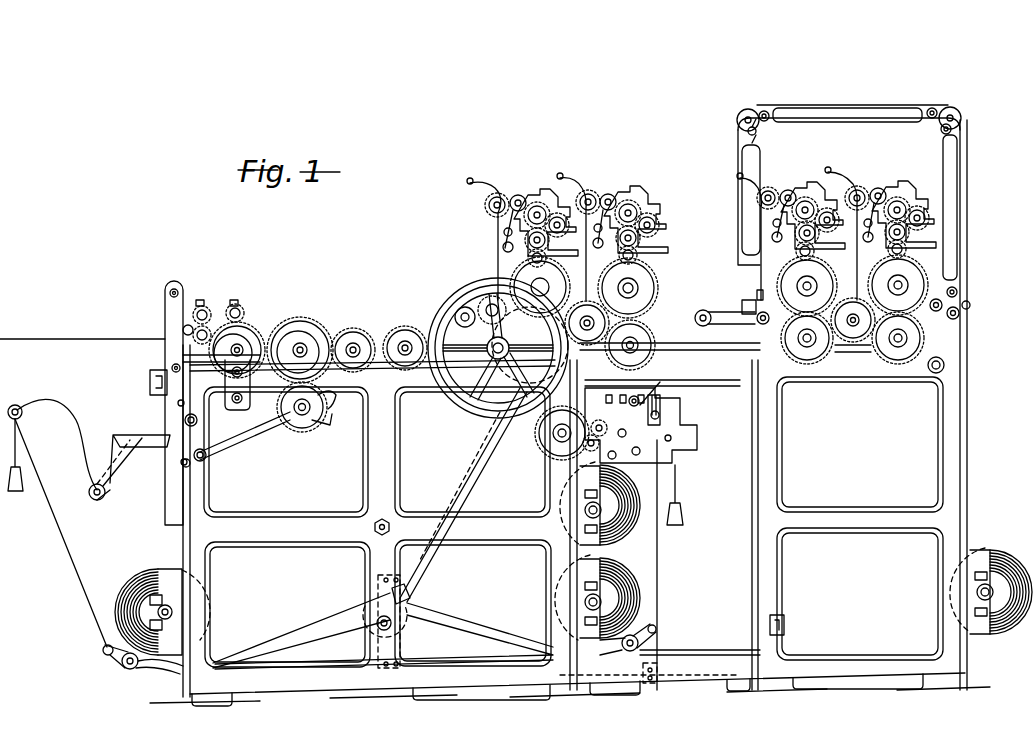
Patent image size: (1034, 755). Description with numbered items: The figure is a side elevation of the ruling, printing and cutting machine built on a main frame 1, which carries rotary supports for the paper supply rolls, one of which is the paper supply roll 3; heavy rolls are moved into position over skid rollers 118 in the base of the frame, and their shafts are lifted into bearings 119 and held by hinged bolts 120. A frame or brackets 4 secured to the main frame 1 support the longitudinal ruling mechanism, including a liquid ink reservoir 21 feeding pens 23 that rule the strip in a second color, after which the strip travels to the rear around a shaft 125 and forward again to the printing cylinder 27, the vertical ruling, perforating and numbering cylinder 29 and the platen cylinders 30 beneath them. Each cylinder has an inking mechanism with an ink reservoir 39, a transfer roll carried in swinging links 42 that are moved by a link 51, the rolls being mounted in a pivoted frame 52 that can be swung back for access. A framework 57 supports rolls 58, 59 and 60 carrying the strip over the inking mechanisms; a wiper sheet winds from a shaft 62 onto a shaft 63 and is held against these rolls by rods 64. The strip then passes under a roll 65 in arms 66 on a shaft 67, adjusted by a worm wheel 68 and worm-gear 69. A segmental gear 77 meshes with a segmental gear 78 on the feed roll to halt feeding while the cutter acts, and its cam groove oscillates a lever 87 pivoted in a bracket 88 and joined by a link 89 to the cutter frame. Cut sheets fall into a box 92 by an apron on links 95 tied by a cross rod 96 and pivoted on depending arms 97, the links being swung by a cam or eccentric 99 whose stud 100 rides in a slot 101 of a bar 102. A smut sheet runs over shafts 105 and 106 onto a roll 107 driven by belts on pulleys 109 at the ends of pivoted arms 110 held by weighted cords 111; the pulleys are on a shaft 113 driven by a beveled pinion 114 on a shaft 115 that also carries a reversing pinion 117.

The main frame 1 is at (495, 413).
The paper supply roll 3 is at (986, 560).
The frame or brackets 4 is at (683, 453).
The liquid ink reservoir 21 is at (657, 393).
The pens 23 is at (640, 397).
The printing cylinder 27 is at (892, 278).
The vertical ruling, perforating and numbering cylinder 29 is at (815, 282).
The platen cylinders 30 is at (800, 333).
The ink reservoir 39 is at (478, 198).
The swinging links 42 is at (498, 225).
The link 51 is at (505, 240).
The frame 52 is at (506, 255).
The framework 57 is at (849, 183).
The roll 58 is at (962, 315).
The roll 59 is at (962, 112).
The roll 60 is at (747, 112).
The shaft 62 is at (935, 297).
The shaft 63 is at (748, 129).
The rods 64 is at (766, 111).
The roll 65 is at (698, 316).
The arms 66 is at (722, 314).
The shaft 67 is at (760, 318).
The worm wheel 68 is at (745, 310).
The worm-gear 69 is at (756, 300).
The segmental gear 77 is at (300, 325).
The segmental gear 78 is at (248, 330).
The lever 87 is at (175, 357).
The bracket 88 is at (240, 408).
The link 89 is at (167, 306).
The box 92 is at (57, 433).
The links 95 is at (125, 442).
The cross rod 96 is at (118, 470).
The depending arms 97 is at (90, 462).
The cam or eccentric 99 is at (325, 430).
The stud 100 is at (296, 428).
The slot 101 is at (330, 410).
The bar 102 is at (224, 437).
The shaft 105 is at (186, 472).
The shaft 106 is at (186, 418).
The roll 107 is at (163, 570).
The pulleys 109 is at (128, 673).
The pivoted arms 110 is at (300, 637).
The weighted cords 111 is at (682, 493).
The shaft 113 is at (396, 627).
The beveled pinion 114 is at (404, 600).
The shaft 115 is at (470, 456).
The pinion 117 is at (370, 637).
The skid rollers 118 is at (660, 632).
The bearings 119 is at (590, 514).
The hinged bolts 120 is at (630, 484).
The shaft 125 is at (207, 466).